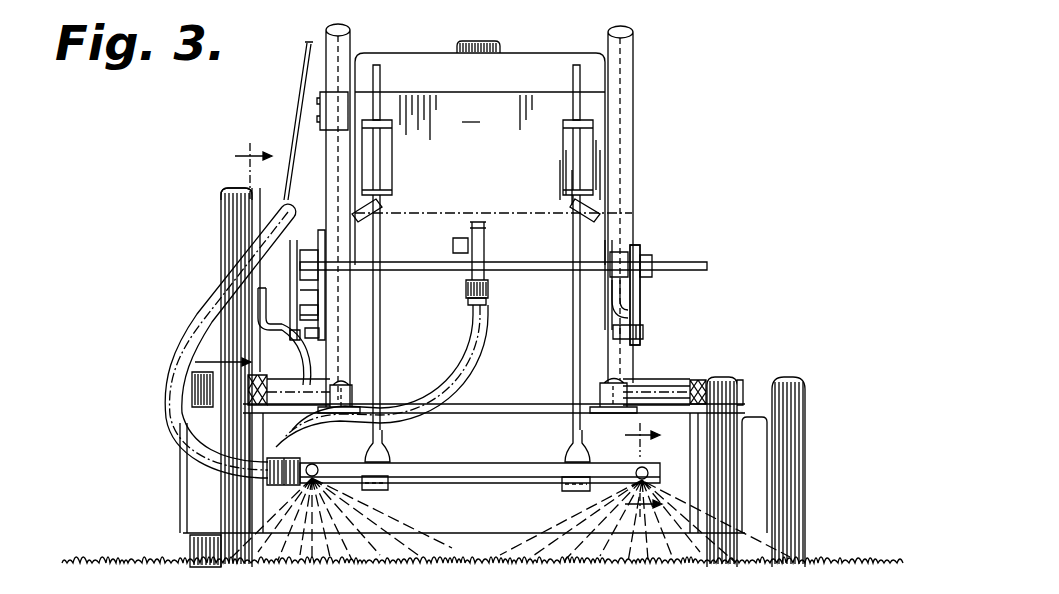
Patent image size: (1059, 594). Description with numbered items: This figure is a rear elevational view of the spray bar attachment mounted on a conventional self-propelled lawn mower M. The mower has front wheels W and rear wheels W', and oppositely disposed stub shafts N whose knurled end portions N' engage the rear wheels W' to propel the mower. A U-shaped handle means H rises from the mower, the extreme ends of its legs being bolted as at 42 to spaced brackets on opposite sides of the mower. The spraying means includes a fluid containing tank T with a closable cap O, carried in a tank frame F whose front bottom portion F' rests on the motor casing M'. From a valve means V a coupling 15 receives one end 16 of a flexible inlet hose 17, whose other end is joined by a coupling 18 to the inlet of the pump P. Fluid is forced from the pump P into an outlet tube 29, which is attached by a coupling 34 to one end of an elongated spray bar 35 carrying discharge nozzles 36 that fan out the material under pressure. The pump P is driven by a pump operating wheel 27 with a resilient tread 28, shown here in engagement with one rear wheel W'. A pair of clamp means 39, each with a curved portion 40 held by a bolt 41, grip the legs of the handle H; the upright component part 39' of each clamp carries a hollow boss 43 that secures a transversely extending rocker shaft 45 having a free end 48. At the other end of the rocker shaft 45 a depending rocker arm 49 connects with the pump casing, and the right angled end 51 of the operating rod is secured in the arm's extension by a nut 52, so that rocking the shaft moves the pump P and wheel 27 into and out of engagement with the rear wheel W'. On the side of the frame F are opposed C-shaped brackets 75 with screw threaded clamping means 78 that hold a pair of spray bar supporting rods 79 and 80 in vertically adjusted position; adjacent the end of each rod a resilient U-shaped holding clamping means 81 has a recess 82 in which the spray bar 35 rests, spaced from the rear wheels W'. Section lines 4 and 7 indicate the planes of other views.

The handle means H is at (328, 46).
The pump P is at (284, 195).
The tank T is at (413, 58).
The tank frame F is at (471, 111).
The front bottom portion F' is at (493, 232).
The closable cap O is at (500, 47).
The spray bar supporting rod 79 is at (382, 75).
The spray bar supporting rod 80 is at (573, 75).
The C-shaped brackets 75 is at (392, 158).
The clamping means 78 is at (380, 204).
The free end 48 is at (706, 265).
The rocker shaft 45 is at (658, 247).
The hollow boss 43 is at (320, 248).
The rocker arm 49 is at (316, 262).
The nut 52 is at (300, 300).
The right angled end 51 is at (300, 338).
The component part 39' is at (493, 292).
The clamp means 39 is at (464, 301).
The curved portion 40 is at (340, 318).
The bolt 41 is at (320, 334).
The lawn mower M is at (680, 295).
The motor casing M' is at (636, 262).
The valve means V is at (458, 233).
The coupling 15 is at (490, 287).
The end 16 is at (488, 303).
The flexible inlet hose 17 is at (488, 330).
The coupling 18 is at (203, 325).
The outlet tube 29 is at (267, 223).
The pump operating wheel 27 is at (230, 252).
The resilient tread 28 is at (236, 188).
The front wheels W is at (501, 454).
The rear wheels W' is at (459, 447).
The stub shafts N is at (483, 361).
The knurled end portions N' is at (707, 366).
The bolts 42 is at (354, 395).
The spray bar 35 is at (497, 460).
The coupling 34 is at (283, 460).
The discharge nozzles 36 is at (318, 466).
The spray bar holding clamping means 81 is at (388, 450).
The recess 82 is at (388, 483).
The section line 4 is at (236, 255).
The section line 7 is at (652, 479).